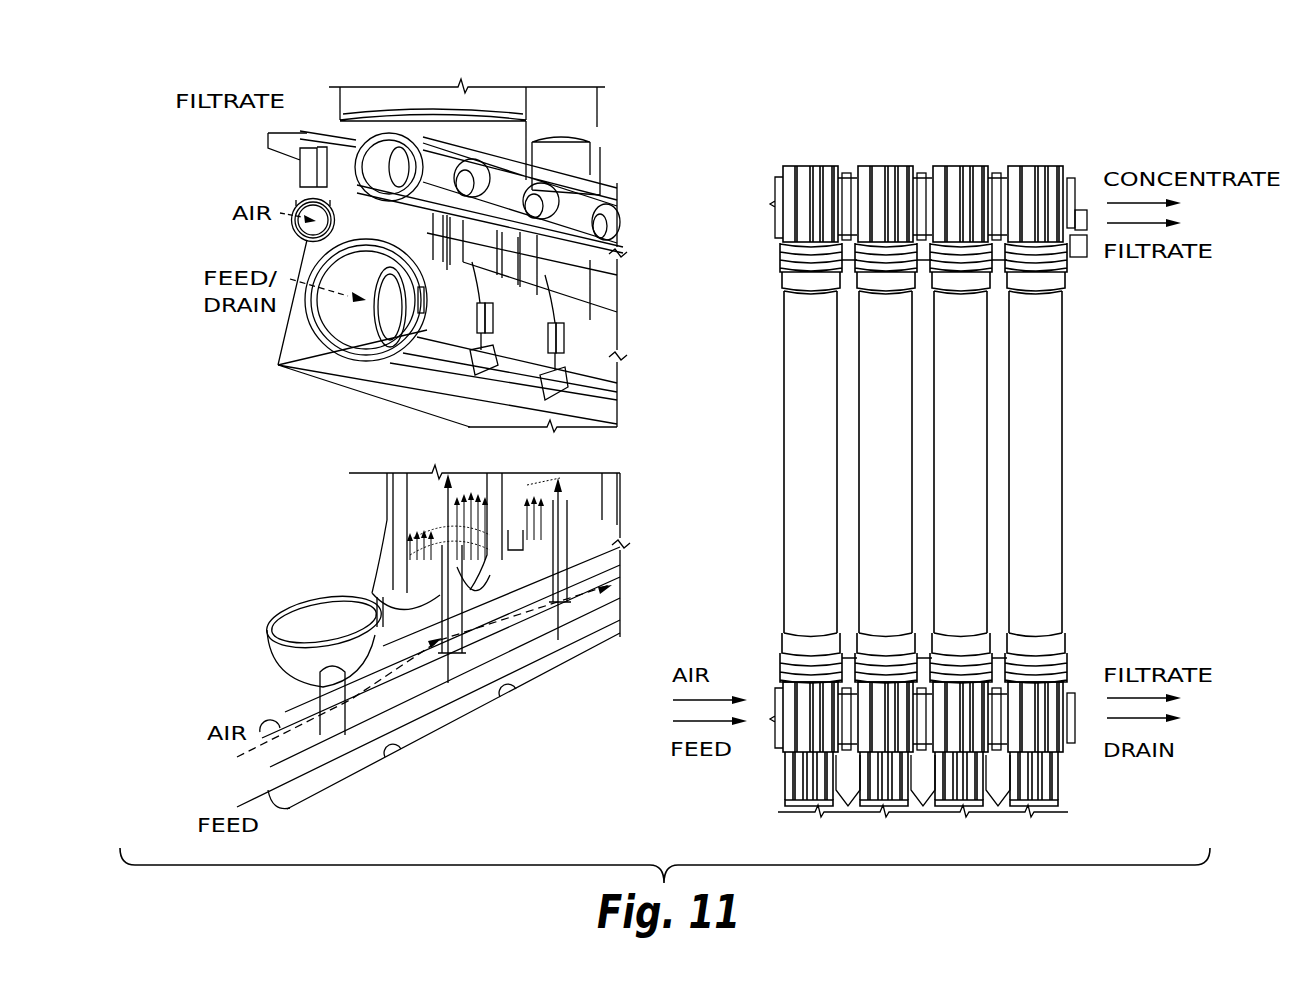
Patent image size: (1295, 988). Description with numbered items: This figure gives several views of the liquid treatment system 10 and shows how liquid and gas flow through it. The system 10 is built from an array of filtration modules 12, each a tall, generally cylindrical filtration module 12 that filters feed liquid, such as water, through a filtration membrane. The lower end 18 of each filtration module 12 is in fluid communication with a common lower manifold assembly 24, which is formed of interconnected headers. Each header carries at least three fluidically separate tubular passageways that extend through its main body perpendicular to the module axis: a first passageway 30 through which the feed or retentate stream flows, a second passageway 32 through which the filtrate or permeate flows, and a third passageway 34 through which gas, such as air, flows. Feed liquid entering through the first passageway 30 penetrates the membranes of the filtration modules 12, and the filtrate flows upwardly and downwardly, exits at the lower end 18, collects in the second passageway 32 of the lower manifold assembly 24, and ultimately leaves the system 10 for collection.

The liquid treatment system 10 is at (1098, 118).
The filtration module 12 is at (575, 115).
The lower end 18 is at (545, 153).
The lower manifold assembly 24 is at (617, 191).
The first passageway 30 is at (340, 337).
The second passageway 32 is at (355, 183).
The third passageway 34 is at (300, 203).